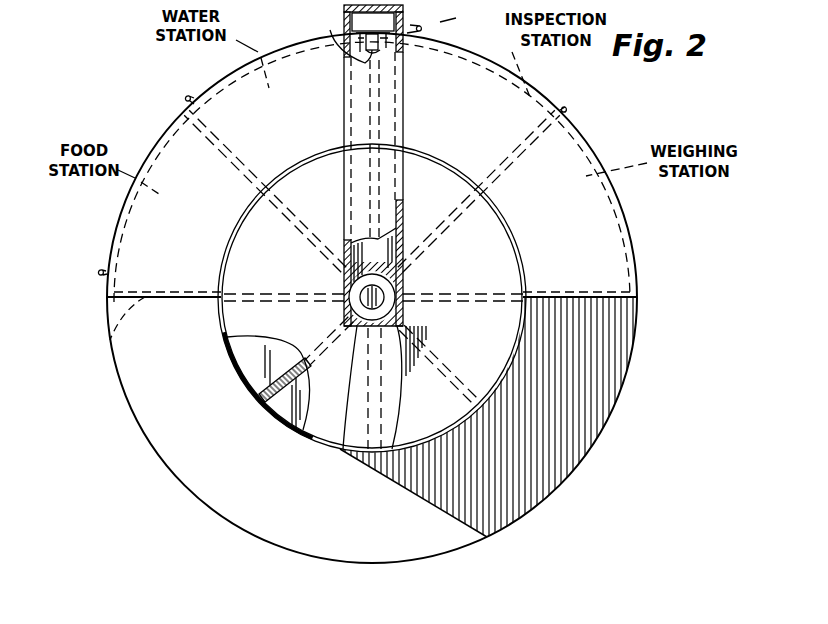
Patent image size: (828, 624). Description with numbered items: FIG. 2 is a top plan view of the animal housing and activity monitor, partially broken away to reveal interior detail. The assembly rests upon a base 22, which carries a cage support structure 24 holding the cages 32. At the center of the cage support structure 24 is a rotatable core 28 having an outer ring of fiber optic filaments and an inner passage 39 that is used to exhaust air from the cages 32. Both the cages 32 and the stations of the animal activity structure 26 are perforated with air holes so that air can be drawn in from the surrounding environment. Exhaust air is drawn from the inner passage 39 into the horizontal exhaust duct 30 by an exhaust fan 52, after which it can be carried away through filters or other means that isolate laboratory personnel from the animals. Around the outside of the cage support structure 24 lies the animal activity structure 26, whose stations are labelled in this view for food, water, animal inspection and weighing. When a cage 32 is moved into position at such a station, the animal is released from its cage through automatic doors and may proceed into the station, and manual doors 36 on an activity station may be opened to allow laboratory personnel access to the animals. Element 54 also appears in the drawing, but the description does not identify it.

The base 22 is at (188, 490).
The cage support structure 24 is at (228, 248).
The animal activity structure 26 is at (232, 86).
The rotatable core 28 is at (393, 440).
The horizontal exhaust duct 30 is at (407, 62).
The cages 32 is at (258, 361).
The manual doors 36 is at (452, 20).
The inner passage 39 is at (366, 332).
The exhaust fan 52 is at (346, 50).
The channel cap 54 is at (404, 8).